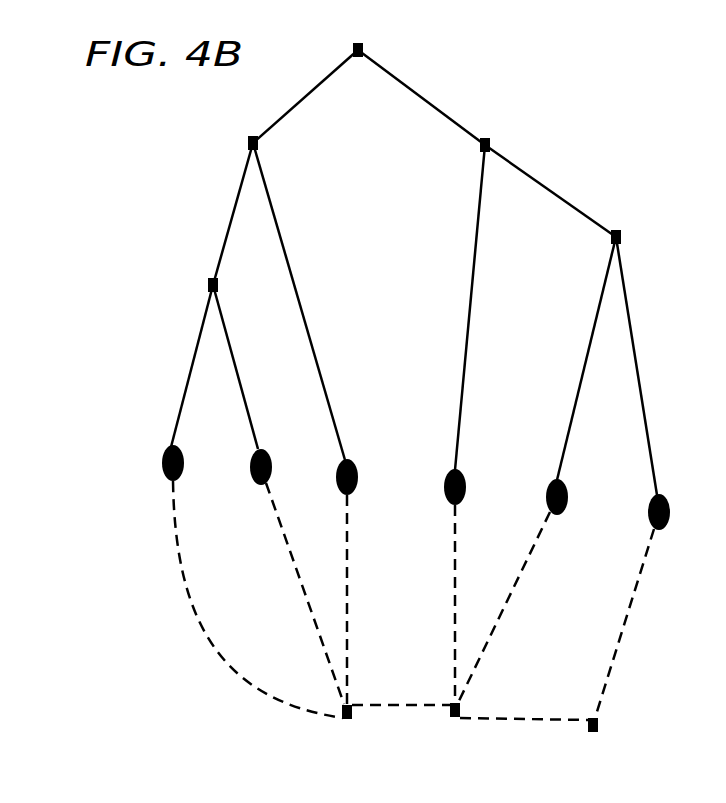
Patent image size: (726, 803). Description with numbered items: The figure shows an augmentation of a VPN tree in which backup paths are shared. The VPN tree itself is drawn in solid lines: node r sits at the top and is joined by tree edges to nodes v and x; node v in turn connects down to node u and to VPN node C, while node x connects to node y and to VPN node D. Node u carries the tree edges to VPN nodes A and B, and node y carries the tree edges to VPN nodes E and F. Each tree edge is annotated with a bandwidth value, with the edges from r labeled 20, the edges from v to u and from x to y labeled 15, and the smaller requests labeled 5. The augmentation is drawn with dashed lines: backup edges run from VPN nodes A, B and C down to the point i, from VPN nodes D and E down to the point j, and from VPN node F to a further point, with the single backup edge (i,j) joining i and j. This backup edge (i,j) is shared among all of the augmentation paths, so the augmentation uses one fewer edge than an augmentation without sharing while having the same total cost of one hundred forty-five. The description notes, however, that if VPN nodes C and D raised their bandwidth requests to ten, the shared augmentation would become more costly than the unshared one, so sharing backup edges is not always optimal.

The edge weight 20 is at (369, 377).
The edge weight 15 is at (412, 423).
The edge weight 5 is at (413, 600).
The VPN tree node r is at (357, 38).
The VPN tree node v is at (253, 131).
The VPN tree node x is at (485, 133).
The VPN tree node u is at (206, 284).
The VPN tree node y is at (623, 238).
The VPN node A is at (180, 463).
The VPN node B is at (269, 467).
The VPN node C is at (355, 477).
The VPN node D is at (463, 487).
The VPN node E is at (564, 497).
The VPN node F is at (665, 512).
The shared backup edge endpoint i is at (347, 730).
The shared backup edge endpoint j is at (454, 729).